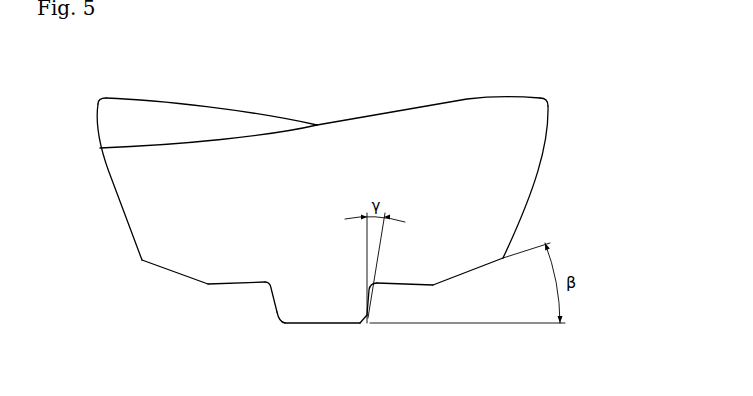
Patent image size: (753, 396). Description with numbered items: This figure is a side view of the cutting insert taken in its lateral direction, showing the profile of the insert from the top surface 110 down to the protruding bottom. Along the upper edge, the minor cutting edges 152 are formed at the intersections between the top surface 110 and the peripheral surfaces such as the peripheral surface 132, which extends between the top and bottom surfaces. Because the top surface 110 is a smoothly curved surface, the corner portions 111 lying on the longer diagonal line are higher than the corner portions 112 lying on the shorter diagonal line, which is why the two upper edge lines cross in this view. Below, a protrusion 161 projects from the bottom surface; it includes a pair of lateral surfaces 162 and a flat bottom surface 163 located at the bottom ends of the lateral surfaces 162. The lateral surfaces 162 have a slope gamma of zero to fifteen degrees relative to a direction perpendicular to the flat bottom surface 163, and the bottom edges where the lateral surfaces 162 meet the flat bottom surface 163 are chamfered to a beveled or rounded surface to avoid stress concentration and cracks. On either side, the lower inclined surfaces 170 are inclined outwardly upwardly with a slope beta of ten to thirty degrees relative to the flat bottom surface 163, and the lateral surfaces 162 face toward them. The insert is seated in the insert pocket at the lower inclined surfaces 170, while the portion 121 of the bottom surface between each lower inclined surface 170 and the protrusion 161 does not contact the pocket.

The top surface 110 is at (464, 94).
The corner portions 111 is at (92, 96).
The corner portions 112 is at (90, 150).
The portion of the bottom surface 121 is at (236, 287).
The peripheral surface 132 is at (523, 162).
The minor cutting edges 152 is at (240, 112).
The protrusions 161 is at (289, 334).
The lateral surfaces 162 is at (273, 304).
The flat bottom surface 163 is at (323, 325).
The lower inclined surfaces 170 is at (173, 273).